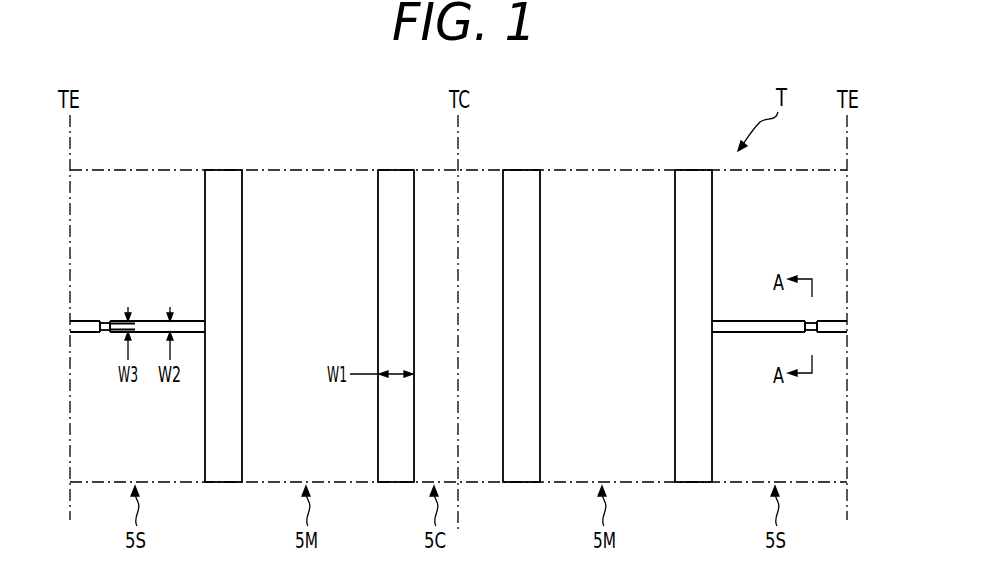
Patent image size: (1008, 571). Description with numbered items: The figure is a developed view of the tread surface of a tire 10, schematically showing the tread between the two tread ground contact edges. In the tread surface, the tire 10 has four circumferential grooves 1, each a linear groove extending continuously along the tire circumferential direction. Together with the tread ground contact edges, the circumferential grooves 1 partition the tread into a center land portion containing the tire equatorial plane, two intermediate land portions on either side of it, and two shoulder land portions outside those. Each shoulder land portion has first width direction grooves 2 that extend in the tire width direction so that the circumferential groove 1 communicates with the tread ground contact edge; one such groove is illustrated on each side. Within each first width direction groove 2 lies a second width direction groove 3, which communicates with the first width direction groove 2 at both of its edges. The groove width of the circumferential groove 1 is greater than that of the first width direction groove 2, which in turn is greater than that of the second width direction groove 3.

The tire 10 is at (586, 118).
The circumferential groove 1 is at (219, 190).
The first width direction groove 2 is at (80, 327).
The second width direction groove 3 is at (105, 321).